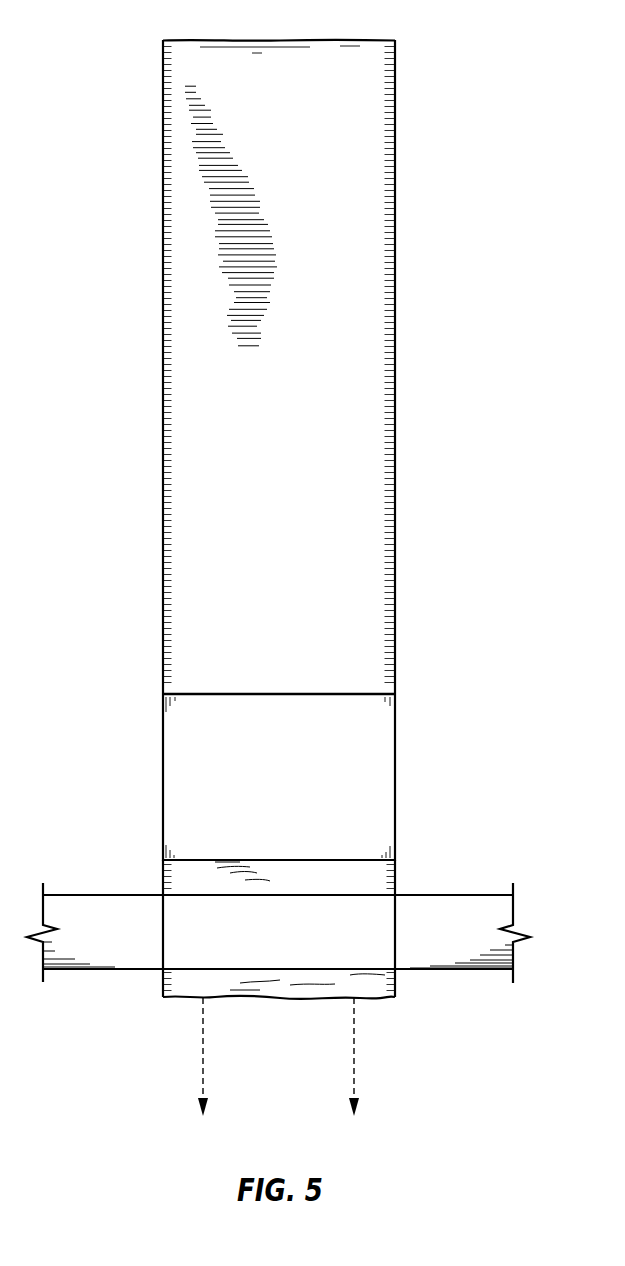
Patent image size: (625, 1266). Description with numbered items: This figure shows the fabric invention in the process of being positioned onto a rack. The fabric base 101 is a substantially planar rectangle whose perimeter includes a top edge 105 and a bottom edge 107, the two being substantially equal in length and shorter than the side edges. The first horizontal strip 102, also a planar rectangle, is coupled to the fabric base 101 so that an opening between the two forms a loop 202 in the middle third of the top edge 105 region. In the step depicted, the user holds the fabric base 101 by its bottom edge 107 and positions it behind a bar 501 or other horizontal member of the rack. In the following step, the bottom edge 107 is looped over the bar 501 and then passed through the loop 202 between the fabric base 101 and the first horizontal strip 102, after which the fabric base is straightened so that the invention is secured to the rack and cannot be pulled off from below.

The fabric base 101 is at (300, 379).
The first horizontal strip 102 is at (300, 790).
The top edge 105 is at (278, 998).
The bottom edge 107 is at (283, 39).
The loop 202 is at (285, 684).
The bar 501 is at (452, 909).